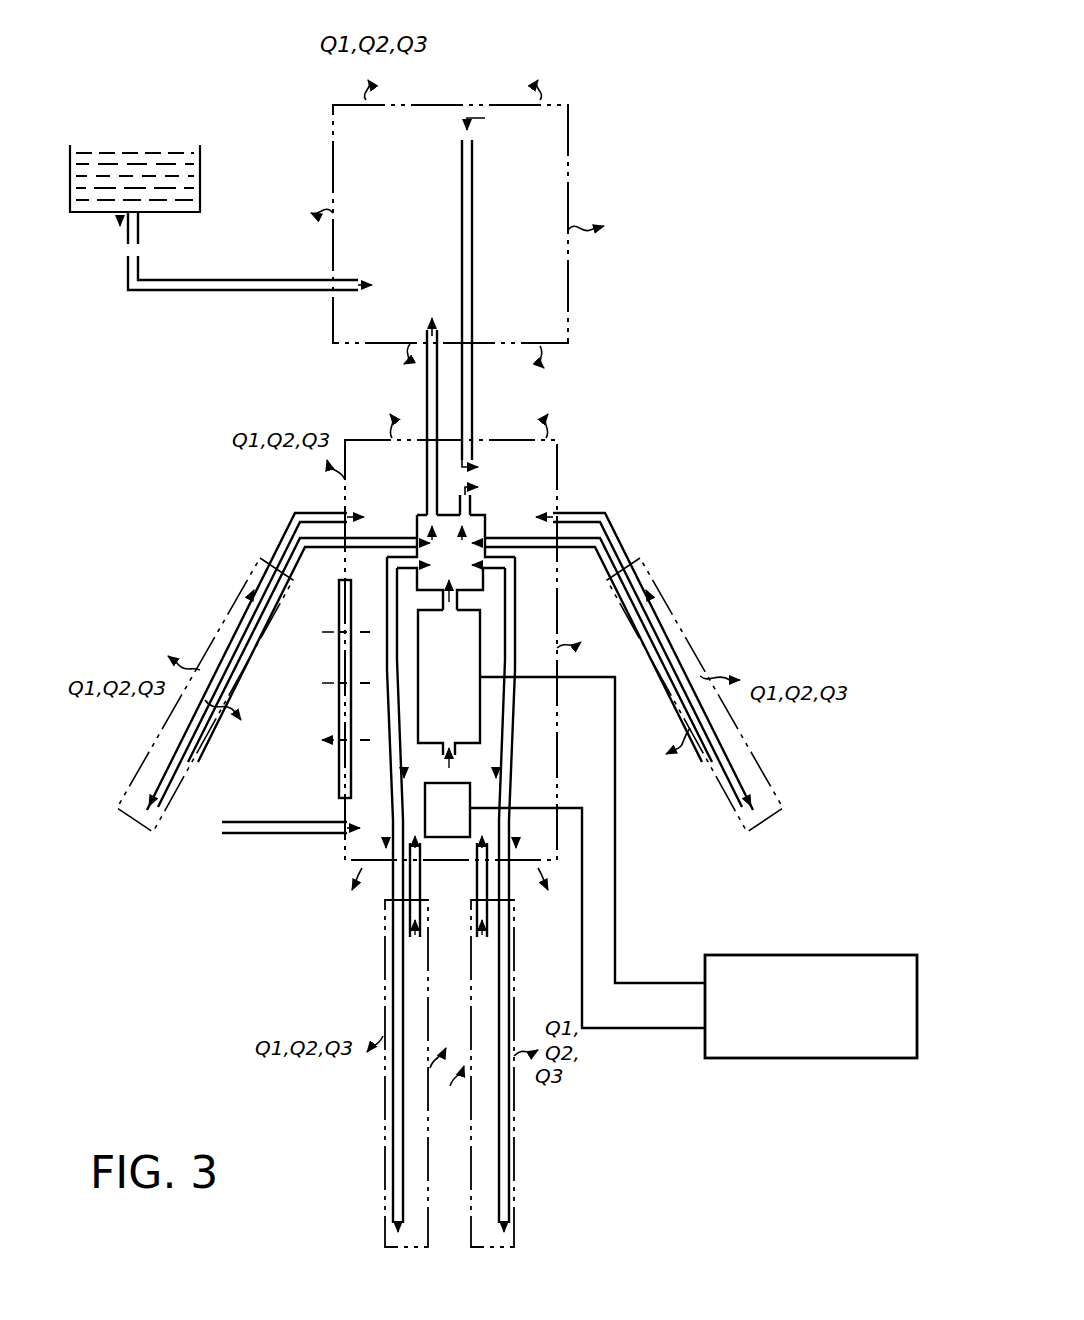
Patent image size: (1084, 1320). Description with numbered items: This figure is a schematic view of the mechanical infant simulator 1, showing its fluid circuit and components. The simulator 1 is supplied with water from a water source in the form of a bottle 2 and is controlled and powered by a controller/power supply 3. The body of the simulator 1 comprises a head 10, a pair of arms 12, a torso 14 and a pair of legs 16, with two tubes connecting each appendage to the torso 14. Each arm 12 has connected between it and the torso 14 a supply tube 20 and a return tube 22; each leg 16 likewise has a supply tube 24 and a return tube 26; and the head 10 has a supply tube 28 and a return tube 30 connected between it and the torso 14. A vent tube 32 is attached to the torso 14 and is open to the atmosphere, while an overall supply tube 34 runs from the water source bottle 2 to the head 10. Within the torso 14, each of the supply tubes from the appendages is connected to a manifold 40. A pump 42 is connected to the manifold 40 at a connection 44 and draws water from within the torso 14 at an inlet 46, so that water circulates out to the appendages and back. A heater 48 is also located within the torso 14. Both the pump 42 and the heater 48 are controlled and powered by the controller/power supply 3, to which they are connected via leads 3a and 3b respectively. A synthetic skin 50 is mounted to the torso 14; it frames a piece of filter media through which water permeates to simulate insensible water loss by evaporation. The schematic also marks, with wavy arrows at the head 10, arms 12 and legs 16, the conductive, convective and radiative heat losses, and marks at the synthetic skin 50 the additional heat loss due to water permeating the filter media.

The mechanical infant simulator 1 is at (190, 970).
The bottle 2 is at (248, 96).
The controller/power supply 3 is at (782, 1066).
The lead 3a is at (618, 922).
The lead 3b is at (604, 1032).
The head 10 is at (568, 130).
The arm 12 is at (242, 586).
The torso 14 is at (558, 462).
The leg 16 is at (384, 1124).
The supply tube 20 is at (310, 556).
The return tube 22 is at (284, 530).
The supply tube 24 is at (391, 883).
The return tube 26 is at (484, 868).
The supply tube 28 is at (418, 370).
The return tube 30 is at (476, 392).
The vent tube 32 is at (286, 835).
The overall supply tube 34 is at (274, 292).
The manifold 40 is at (418, 519).
The pump 42 is at (484, 696).
The connection 44 is at (455, 600).
The inlet 46 is at (458, 754).
The heater 48 is at (470, 817).
The synthetic skin 50 is at (330, 784).